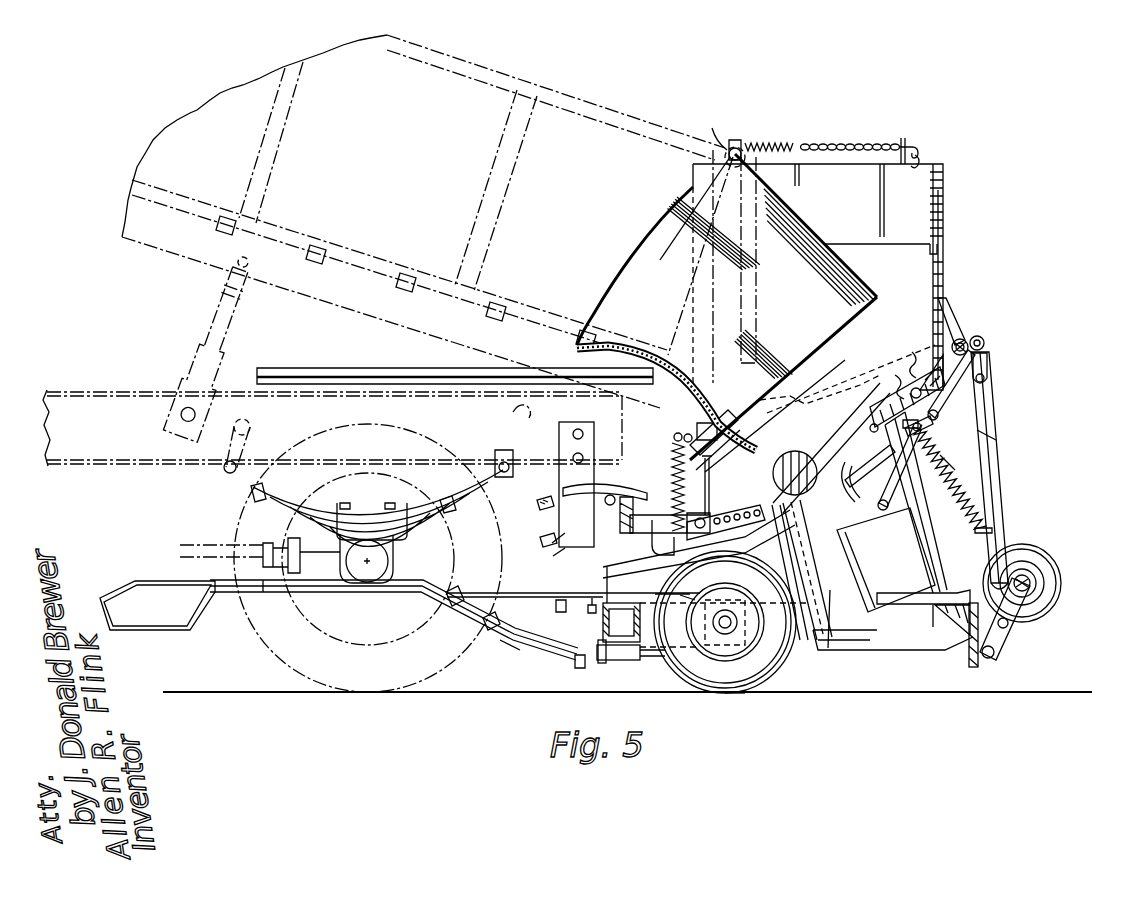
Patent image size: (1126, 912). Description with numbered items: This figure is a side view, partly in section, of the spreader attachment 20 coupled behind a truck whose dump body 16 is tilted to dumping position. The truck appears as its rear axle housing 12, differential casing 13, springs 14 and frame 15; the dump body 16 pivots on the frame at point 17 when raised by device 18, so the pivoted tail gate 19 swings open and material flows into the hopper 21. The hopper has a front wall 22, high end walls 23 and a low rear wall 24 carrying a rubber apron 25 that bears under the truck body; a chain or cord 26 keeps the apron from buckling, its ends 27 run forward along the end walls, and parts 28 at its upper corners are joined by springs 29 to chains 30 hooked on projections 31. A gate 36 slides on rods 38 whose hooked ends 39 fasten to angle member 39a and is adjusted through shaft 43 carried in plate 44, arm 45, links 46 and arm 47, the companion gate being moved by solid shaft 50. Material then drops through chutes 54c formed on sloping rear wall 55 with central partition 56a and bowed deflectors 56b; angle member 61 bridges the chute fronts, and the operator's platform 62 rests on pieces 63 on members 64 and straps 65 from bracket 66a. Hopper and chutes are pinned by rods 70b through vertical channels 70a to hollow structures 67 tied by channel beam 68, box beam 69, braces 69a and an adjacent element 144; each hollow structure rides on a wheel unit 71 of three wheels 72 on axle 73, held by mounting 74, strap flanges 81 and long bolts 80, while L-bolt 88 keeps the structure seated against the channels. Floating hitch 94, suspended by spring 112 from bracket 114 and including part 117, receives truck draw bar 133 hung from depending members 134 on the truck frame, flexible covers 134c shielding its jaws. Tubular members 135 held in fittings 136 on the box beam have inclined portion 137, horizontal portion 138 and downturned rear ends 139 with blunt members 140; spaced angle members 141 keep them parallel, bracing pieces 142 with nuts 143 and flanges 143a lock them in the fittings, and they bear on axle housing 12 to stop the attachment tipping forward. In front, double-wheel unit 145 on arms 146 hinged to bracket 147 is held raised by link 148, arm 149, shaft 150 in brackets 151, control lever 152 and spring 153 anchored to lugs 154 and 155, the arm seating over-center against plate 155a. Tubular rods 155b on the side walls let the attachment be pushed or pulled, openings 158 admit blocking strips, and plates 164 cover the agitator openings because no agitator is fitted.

The rear axle housing 12 is at (340, 556).
The differential casing 13 is at (415, 552).
The springs 14 is at (440, 508).
The frame 15 is at (121, 402).
The dump body 16 is at (598, 110).
The pivot point 17 is at (513, 405).
The raising device 18 is at (228, 324).
The pivoted tail gate 19 is at (763, 289).
The spreader attachment 20 is at (1011, 229).
The hopper 21 is at (950, 175).
The front wall 22 is at (946, 282).
The end walls 23 is at (912, 215).
The rear wall 24 is at (757, 460).
The flexible sheet or apron 25 is at (672, 380).
The chain or cord 26 is at (704, 415).
The ends of sheet 27 is at (848, 310).
The parts 28 is at (722, 136).
The springs 29 is at (768, 140).
The chains 30 is at (830, 144).
The projections 31 is at (902, 142).
The gate 36 is at (818, 535).
The rods 38 is at (878, 511).
The hooked ends 39 is at (878, 453).
The angle member 39a is at (871, 426).
The shaft 43 is at (988, 463).
The plate 44 is at (896, 416).
The arm 45 is at (965, 505).
The links 46 is at (928, 430).
The arm 47 is at (1000, 395).
The solid shaft 50 is at (993, 380).
The chutes 54c is at (900, 640).
The rear wall 55 is at (846, 642).
The common partition 56a is at (845, 562).
The triangular deflector 56b is at (826, 588).
The angle member 61 is at (896, 592).
The platform 62 is at (1062, 588).
The pieces 63 is at (946, 637).
The members 64 is at (921, 528).
The straps 65 is at (934, 549).
The bracket 66a is at (886, 382).
The hollow structures 67 is at (649, 561).
The channel beam 68 is at (742, 536).
The box beam 69 is at (621, 622).
The braces 69a is at (606, 576).
The vertical channels 70a is at (693, 482).
The rods 70b is at (730, 506).
The wheel unit 71 is at (796, 675).
The wheels 72 is at (723, 694).
The axle 73 is at (735, 640).
The mounting 74 is at (718, 590).
The long bolts 80 is at (652, 660).
The flanges 81 is at (700, 688).
The L-bolt 88 is at (673, 492).
The floating hitch 94 is at (547, 527).
The spring 112 is at (700, 457).
The bracket 114 is at (686, 436).
The bolt 117 is at (537, 505).
The draft member 133 is at (563, 540).
The depending members 134 is at (565, 450).
The flexible covers 134c is at (594, 488).
The tubular members 135 is at (274, 599).
The fittings 136 is at (615, 661).
The inclined portion 137 is at (509, 648).
The horizontal portion 138 is at (368, 584).
The rear ends 139 is at (124, 582).
The blunt members 140 is at (186, 633).
The clamp 141 is at (560, 606).
The bracing pieces 142 is at (493, 632).
The nuts 143 is at (687, 590).
The flanges 143a is at (575, 663).
The fitting 144 is at (585, 603).
The double-wheel unit 145 is at (1059, 619).
The arms 146 is at (1010, 655).
The bracket 147 is at (975, 667).
The link 148 is at (993, 530).
The arm 149 is at (986, 345).
The shaft 150 is at (969, 346).
The brackets 151 is at (958, 322).
The control lever 152 is at (843, 378).
The spring 153 is at (952, 456).
The lug 154 is at (1040, 556).
The lug 155 is at (940, 405).
The plate 155a is at (904, 357).
The tubular rods 155b is at (370, 368).
The openings 158 is at (812, 462).
The plates 164 is at (798, 448).